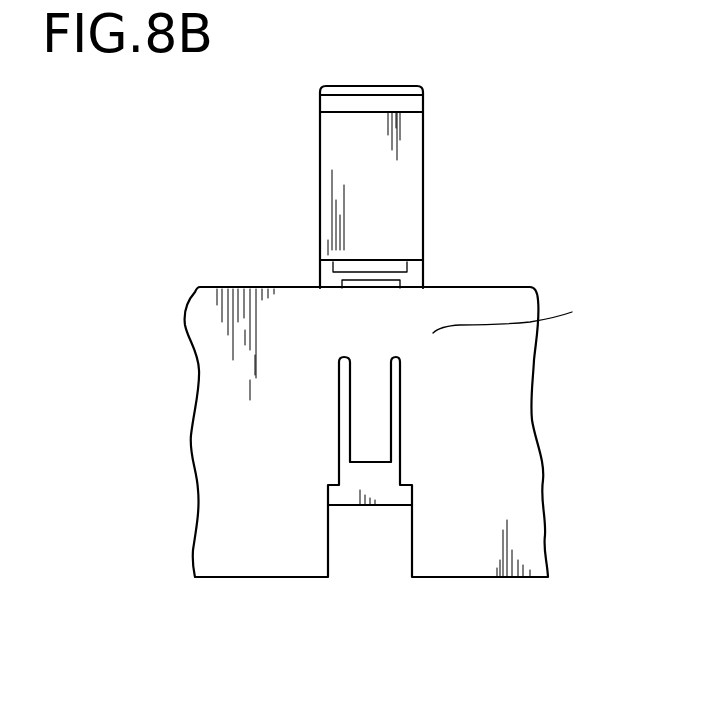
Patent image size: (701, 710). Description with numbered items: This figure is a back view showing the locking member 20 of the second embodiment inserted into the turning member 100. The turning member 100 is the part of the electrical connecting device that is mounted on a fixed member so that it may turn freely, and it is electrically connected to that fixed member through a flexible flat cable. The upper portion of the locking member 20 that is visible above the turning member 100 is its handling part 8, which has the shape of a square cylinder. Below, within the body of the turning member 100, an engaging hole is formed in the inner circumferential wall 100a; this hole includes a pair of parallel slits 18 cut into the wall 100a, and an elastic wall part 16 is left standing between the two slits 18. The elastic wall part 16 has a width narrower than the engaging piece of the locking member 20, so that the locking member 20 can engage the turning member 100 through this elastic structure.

The handling part 8 is at (410, 177).
The elastic wall part 16 is at (376, 400).
The slits 18 is at (347, 443).
The locking member 20 is at (433, 134).
The turning member 100 is at (440, 288).
The inner circumferential wall 100a is at (535, 310).